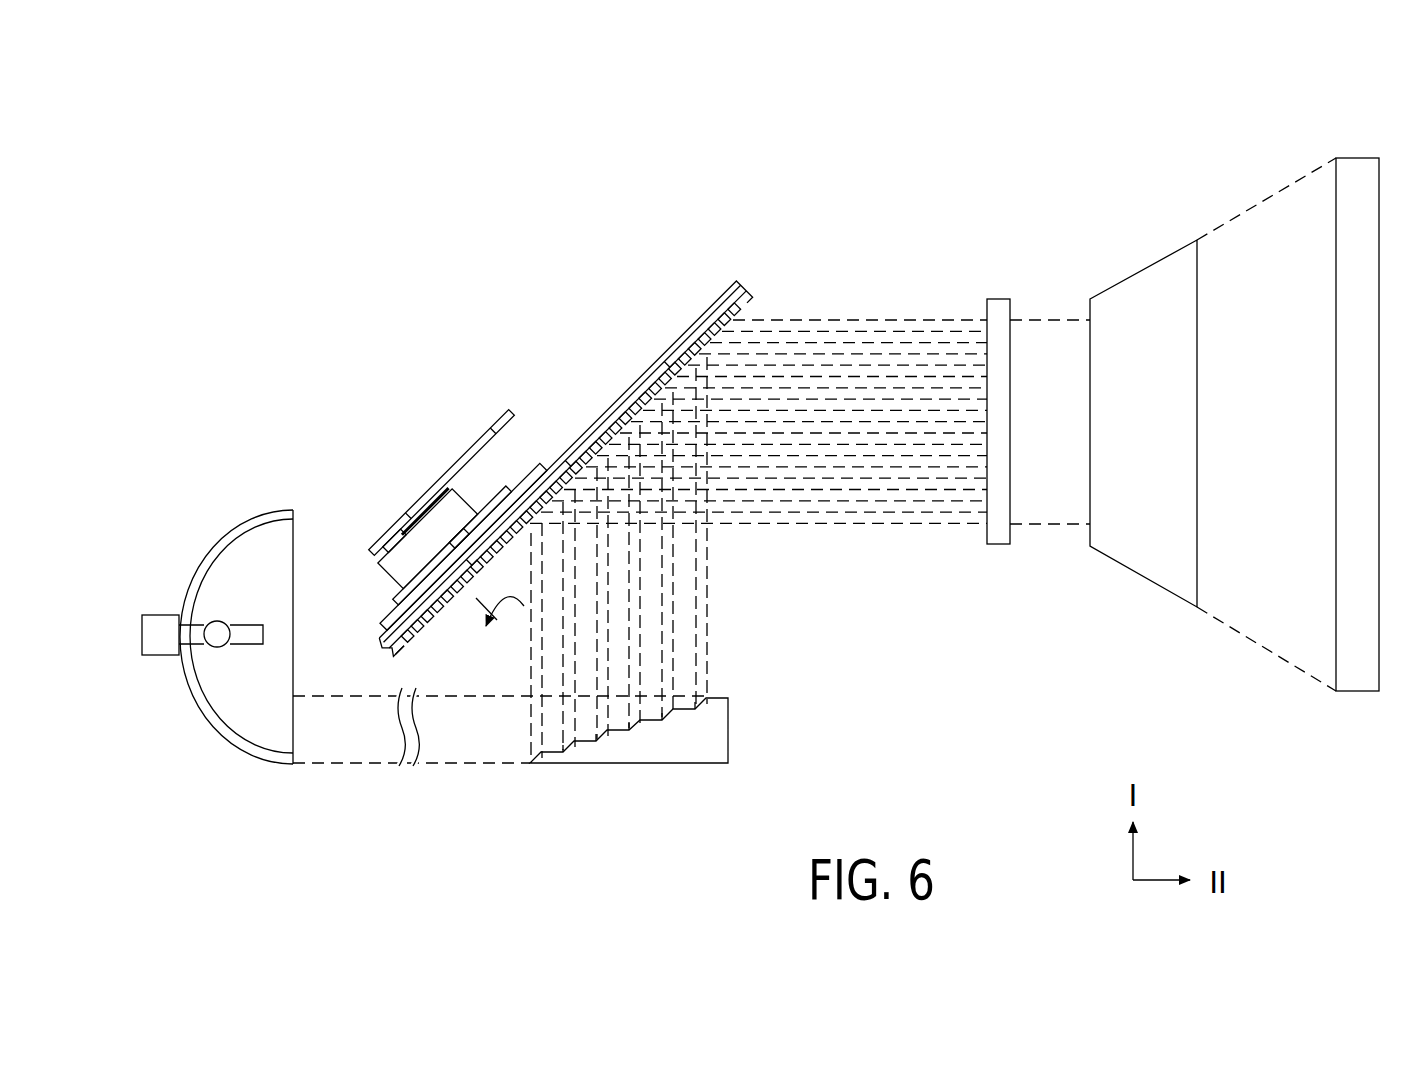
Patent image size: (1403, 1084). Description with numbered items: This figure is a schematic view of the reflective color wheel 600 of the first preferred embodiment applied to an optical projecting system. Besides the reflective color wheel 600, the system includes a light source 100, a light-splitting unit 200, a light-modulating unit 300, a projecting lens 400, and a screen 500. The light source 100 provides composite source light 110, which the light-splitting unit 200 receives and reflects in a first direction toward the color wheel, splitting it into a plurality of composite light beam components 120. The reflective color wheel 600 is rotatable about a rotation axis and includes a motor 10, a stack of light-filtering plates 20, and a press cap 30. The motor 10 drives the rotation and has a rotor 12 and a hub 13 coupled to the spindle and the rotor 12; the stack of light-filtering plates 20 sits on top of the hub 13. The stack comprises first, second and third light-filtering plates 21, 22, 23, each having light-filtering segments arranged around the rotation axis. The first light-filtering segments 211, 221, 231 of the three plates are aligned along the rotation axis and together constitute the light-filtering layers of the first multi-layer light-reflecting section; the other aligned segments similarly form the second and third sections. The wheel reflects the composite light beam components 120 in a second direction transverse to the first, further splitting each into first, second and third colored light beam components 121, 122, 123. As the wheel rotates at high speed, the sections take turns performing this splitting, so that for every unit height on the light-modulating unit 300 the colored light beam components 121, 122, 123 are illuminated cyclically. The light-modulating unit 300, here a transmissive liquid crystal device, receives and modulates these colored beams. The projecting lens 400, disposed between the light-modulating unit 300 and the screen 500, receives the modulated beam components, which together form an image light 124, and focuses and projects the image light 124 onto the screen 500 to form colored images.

The motor 10 is at (405, 490).
The rotor 12 is at (422, 533).
The hub 13 is at (398, 605).
The stack of light-filtering plates 20 is at (712, 284).
The first light-filtering plate 21 is at (752, 297).
The second light-filtering plate 22 is at (746, 290).
The third light-filtering plate 23 is at (734, 281).
The press cap 30 is at (414, 650).
The light source 100 is at (226, 528).
The composite source light 110 is at (412, 776).
The composite light beam components 120 is at (533, 776).
The first colored light beam component 121 is at (770, 400).
The second colored light beam component 122 is at (800, 400).
The third colored light beam component 123 is at (818, 400).
The image light 124 is at (1068, 318).
The light-splitting unit 200 is at (734, 736).
The first light-filtering segment of the first light-filtering plate 211 is at (684, 316).
The first light-filtering segment of the second light-filtering plate 221 is at (656, 345).
The first light-filtering segment of the third light-filtering plate 231 is at (620, 395).
The light-modulating unit 300 is at (1002, 550).
The projecting lens 400 is at (1147, 588).
The screen 500 is at (1350, 698).
The reflective color wheel 600 is at (433, 344).